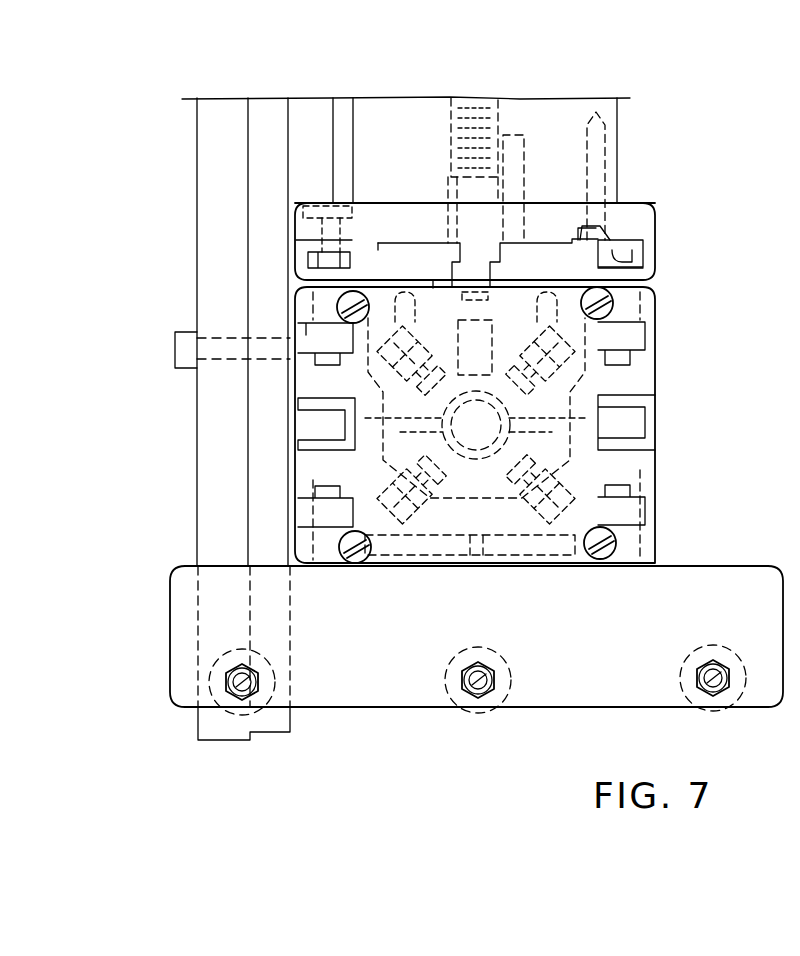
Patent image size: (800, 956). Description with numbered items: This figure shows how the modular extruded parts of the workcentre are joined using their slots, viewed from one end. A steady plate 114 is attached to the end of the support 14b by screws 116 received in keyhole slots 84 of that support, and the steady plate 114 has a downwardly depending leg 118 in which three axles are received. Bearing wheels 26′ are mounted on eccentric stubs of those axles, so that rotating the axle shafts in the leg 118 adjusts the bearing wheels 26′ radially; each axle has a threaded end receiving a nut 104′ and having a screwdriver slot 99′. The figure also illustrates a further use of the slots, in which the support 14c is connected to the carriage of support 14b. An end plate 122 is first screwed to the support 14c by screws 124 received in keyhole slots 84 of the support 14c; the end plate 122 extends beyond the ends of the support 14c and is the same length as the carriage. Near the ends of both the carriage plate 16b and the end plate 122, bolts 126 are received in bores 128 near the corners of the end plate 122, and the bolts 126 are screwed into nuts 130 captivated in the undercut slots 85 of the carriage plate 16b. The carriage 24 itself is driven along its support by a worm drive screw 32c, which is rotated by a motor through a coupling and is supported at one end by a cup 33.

The support 14c is at (563, 120).
The bearing wheels 26′ is at (243, 715).
The worm drive screw 32c is at (488, 118).
The cup 33 is at (445, 197).
The keyhole slots 84 is at (600, 145).
The carriage plate 16b is at (387, 208).
The bores 128 is at (322, 212).
The bolts 126 is at (297, 215).
The nuts 130 is at (312, 258).
The undercut slots 85 is at (300, 270).
The end plate 122 is at (635, 222).
The screws 124 is at (615, 225).
The steady plate 114 is at (655, 470).
The carriage 24 is at (330, 428).
The support 14b is at (657, 437).
The screws 116 is at (614, 300).
The leg 118 is at (670, 590).
The nut 104′ is at (258, 678).
The screwdriver slot 99′ is at (475, 692).